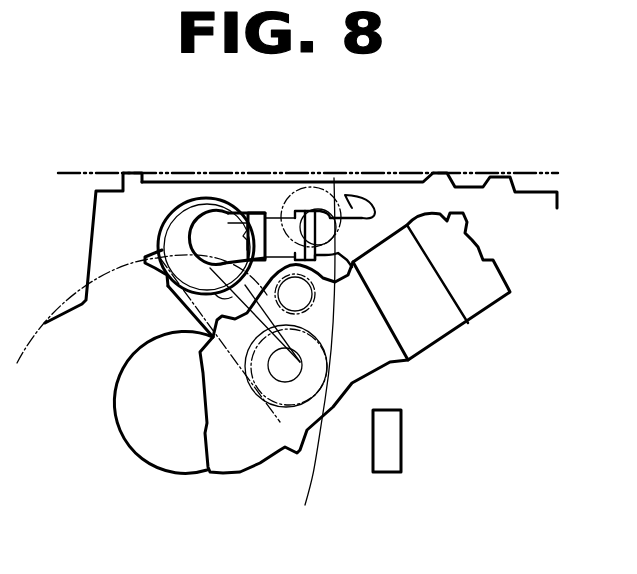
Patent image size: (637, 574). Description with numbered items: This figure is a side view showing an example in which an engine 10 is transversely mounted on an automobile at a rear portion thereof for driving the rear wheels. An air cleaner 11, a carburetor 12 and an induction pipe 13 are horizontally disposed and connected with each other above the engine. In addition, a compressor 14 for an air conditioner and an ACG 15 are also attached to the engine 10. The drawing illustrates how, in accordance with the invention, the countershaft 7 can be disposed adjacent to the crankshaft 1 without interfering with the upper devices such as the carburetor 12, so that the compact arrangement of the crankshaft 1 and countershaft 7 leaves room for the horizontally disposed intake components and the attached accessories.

The crankshaft 1 is at (290, 372).
The countershaft 7 is at (312, 297).
The engine 10 is at (462, 333).
The air cleaner 11 is at (207, 197).
The carburetor 12 is at (302, 217).
The induction pipe 13 is at (355, 207).
The compressor 14 is at (147, 256).
The ACG 15 is at (345, 192).